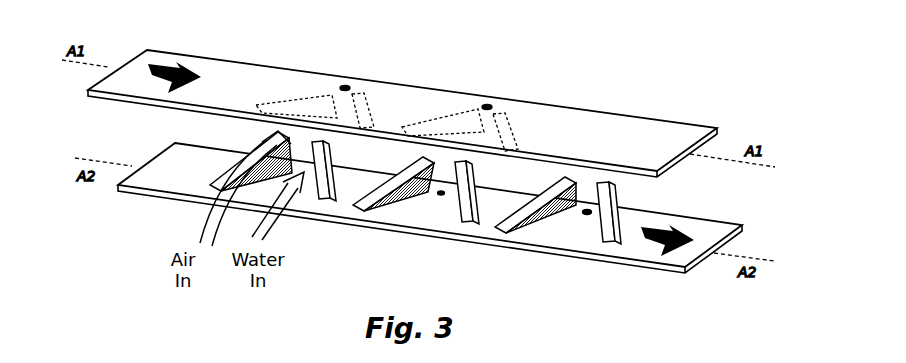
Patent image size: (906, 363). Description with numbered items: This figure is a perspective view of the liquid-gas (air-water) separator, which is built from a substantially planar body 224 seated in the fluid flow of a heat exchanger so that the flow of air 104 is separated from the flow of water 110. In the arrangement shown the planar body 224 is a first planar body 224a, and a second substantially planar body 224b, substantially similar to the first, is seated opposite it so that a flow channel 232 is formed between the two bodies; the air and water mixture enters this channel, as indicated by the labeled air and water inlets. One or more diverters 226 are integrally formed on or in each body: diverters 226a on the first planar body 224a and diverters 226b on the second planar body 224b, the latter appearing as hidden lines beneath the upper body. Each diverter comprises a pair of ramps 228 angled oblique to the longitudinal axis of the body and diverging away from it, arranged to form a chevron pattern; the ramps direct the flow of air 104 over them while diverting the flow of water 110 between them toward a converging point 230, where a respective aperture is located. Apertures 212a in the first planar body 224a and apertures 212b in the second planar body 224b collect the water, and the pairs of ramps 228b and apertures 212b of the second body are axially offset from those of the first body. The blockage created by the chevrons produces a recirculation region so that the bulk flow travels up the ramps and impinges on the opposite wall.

The gas flow path 104 is at (207, 230).
The condensate flow path 110 is at (278, 227).
The apertures of the first planar body 212a is at (586, 209).
The apertures of the second planar body 212b is at (346, 85).
The planar body 224 is at (133, 185).
The first planar body 224a is at (188, 152).
The second planar body 224b is at (215, 65).
The diverters 226 is at (497, 229).
The diverters of the first planar body 226a is at (388, 211).
The diverters of the second planar body 226b is at (293, 100).
The pair of ramps 228 is at (582, 230).
The pairs of ramps of the second planar body 228b is at (432, 98).
The converging point 230 is at (427, 210).
The flow channel 232 is at (718, 202).